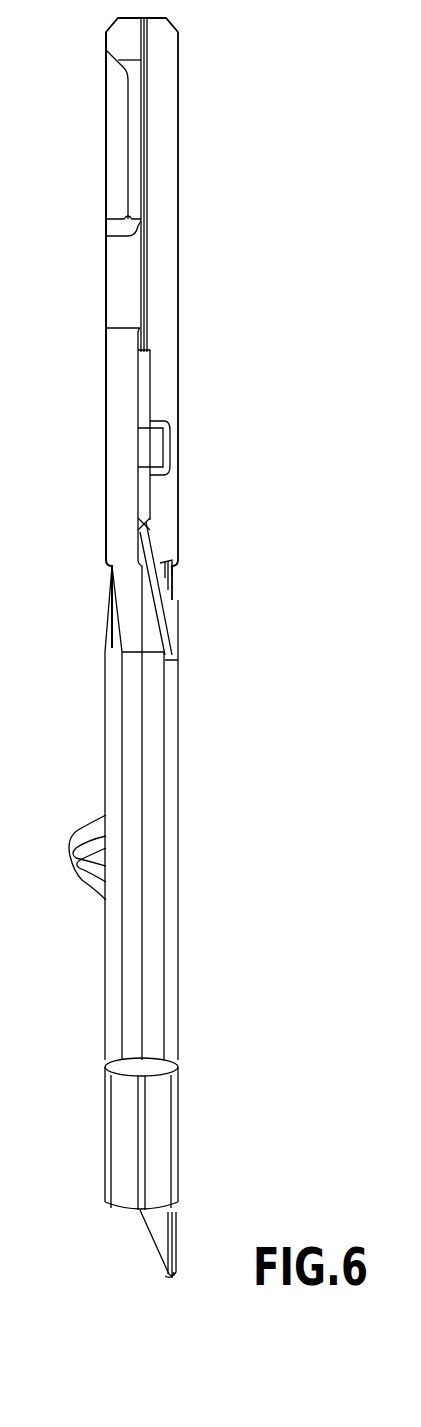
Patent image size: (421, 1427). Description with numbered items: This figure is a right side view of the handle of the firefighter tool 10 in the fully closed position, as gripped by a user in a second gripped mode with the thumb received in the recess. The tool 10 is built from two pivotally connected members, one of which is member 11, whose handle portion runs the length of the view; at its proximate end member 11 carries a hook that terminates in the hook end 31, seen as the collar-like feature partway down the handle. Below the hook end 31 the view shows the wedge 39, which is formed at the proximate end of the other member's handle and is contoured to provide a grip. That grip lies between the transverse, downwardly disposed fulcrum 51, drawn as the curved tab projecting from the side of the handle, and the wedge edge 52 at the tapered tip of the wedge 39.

The firefighter tool 10 is at (258, 276).
The member 11 is at (179, 830).
The hook end 31 is at (155, 1069).
The wedge 39 is at (160, 1232).
The fulcrum 51 is at (70, 868).
The wedge edge 52 is at (168, 1282).